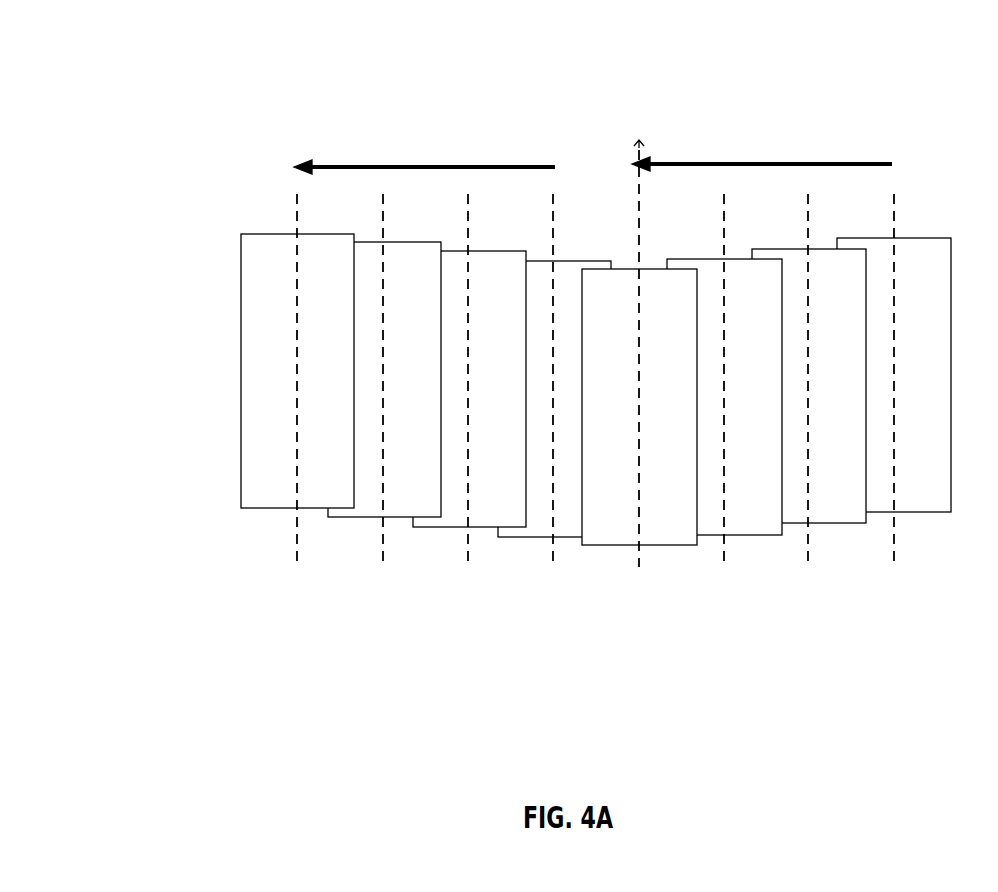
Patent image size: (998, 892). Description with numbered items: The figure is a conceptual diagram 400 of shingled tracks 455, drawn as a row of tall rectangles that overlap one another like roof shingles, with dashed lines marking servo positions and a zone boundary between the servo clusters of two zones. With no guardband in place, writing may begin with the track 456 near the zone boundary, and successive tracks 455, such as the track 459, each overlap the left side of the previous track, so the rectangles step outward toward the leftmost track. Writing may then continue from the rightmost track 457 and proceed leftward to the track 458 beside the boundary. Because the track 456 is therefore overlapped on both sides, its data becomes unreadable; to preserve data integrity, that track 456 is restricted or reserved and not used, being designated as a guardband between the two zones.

The conceptual diagram 400 is at (87, 98).
The shingled tracks 455 is at (230, 264).
The track 456 is at (617, 598).
The rightmost track 457 is at (909, 523).
The track 458 is at (656, 553).
The track 459 is at (459, 539).